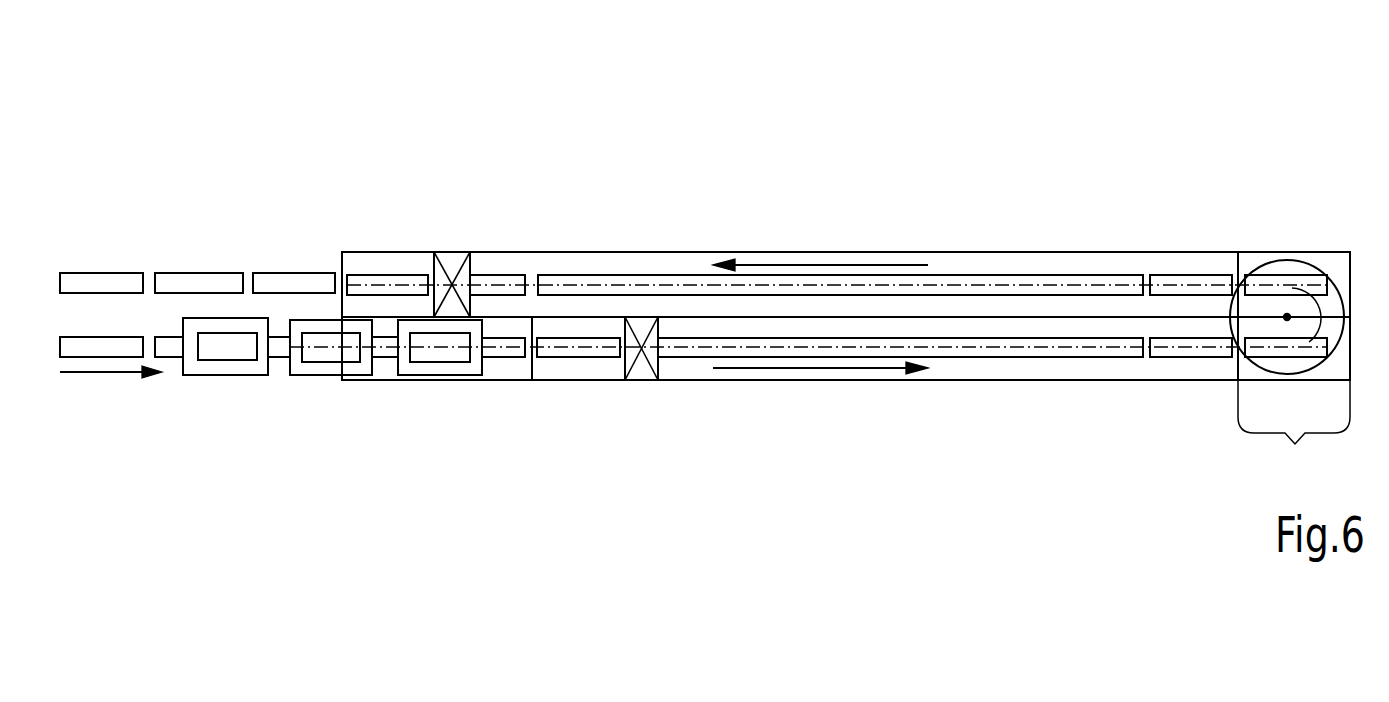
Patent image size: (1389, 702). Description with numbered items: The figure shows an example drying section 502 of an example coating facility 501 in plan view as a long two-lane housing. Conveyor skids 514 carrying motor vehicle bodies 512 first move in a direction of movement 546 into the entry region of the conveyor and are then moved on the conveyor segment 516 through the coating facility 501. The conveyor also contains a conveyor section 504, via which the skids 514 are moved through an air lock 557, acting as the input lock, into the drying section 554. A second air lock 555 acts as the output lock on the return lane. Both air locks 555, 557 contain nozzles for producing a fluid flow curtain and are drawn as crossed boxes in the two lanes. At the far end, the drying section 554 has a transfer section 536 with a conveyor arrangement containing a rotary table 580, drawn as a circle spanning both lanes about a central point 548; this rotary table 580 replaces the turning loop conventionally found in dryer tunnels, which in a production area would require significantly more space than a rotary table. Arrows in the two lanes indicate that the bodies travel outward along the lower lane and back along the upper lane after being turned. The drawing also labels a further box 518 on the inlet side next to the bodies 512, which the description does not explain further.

The coating facility 501 is at (797, 118).
The drying section 502 is at (573, 252).
The conveyor section 504 is at (573, 380).
The motor vehicle bodies 512 is at (248, 362).
The conveyor skids 514 is at (195, 376).
The conveyor segment 516 is at (657, 285).
The processing station 518 is at (437, 380).
The transfer section 536 is at (1294, 366).
The direction of movement 546 is at (105, 374).
The axis of rotation 548 is at (1287, 317).
The drying section 554 is at (1060, 367).
The air lock 555 is at (451, 252).
The air lock 557 is at (650, 372).
The rotary table 580 is at (1338, 270).